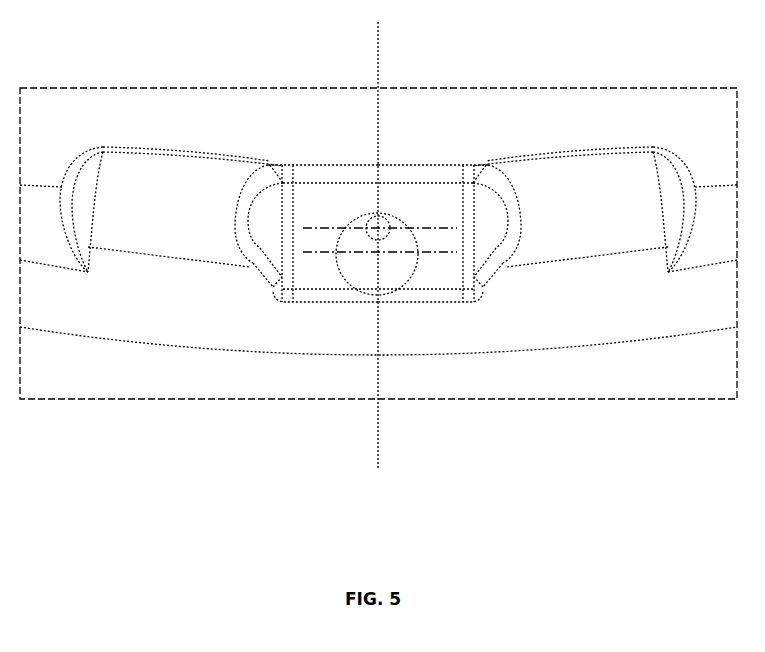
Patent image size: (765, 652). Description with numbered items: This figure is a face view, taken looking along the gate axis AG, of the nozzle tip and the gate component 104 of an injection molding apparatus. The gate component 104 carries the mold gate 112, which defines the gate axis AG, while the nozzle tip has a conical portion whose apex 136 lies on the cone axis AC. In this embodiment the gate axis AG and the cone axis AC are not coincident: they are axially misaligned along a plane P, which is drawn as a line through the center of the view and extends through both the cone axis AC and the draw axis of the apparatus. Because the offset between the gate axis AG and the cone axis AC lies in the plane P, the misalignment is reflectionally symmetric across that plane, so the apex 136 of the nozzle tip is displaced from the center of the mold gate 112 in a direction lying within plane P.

The gate component 104 is at (513, 352).
The mold gate 112 is at (403, 282).
The apex 136 is at (373, 217).
The plane P is at (378, 113).
The cone axis AC is at (377, 228).
The gate axis AG is at (377, 251).